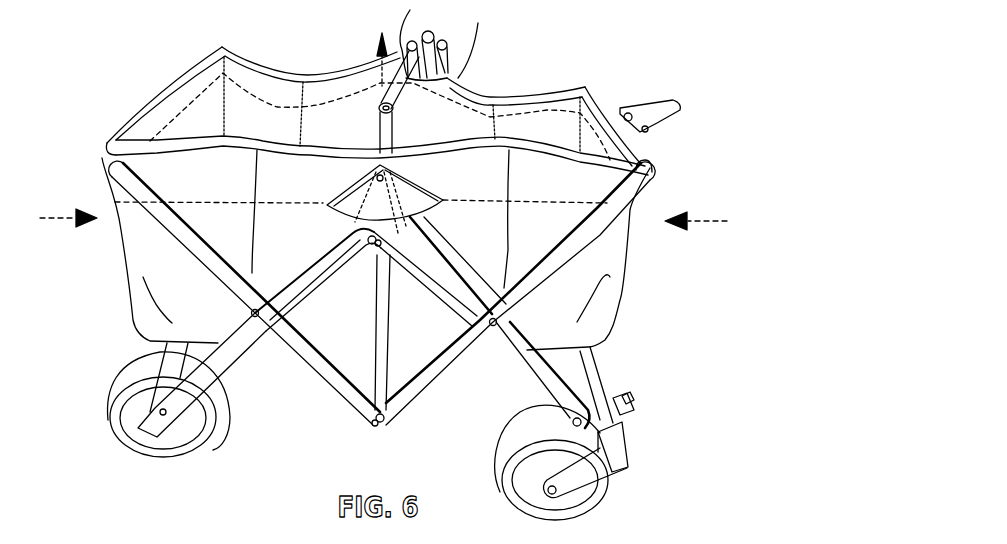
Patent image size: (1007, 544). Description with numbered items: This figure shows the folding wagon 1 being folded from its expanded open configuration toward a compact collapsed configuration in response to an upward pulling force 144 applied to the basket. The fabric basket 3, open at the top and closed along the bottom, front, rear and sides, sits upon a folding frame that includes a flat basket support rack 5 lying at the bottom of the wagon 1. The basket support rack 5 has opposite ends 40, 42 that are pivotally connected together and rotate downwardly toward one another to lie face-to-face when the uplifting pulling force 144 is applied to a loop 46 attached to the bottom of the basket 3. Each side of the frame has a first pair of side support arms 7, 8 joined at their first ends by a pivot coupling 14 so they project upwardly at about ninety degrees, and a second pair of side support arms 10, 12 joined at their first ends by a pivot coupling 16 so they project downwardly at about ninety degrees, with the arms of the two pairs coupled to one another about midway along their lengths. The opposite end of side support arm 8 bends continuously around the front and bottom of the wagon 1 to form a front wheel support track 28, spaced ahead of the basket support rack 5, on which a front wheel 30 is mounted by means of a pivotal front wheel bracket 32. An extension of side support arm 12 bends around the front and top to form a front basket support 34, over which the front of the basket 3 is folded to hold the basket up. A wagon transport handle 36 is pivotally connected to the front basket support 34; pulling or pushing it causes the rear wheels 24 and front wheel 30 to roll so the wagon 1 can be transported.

The folding wagon 1 is at (383, 271).
The fabric basket 3 is at (640, 277).
The basket support rack 5 is at (405, 259).
The side support arm 7 is at (238, 337).
The side support arm 8 is at (520, 353).
The side support arm 10 is at (328, 372).
The side support arm 12 is at (430, 380).
The pivot coupling 14 is at (357, 162).
The pivot coupling 16 is at (374, 428).
The rear wheels 24 is at (152, 452).
The front wheel support track 28 is at (600, 370).
The front wheel 30 is at (583, 498).
The front wheel bracket 32 is at (622, 443).
The front basket support 34 is at (655, 165).
The wagon transport handle 36 is at (648, 103).
The end of basket support rack 40 is at (317, 280).
The end of basket support rack 42 is at (443, 297).
The loop 46 is at (397, 123).
The handle pull direction 144 is at (367, 67).